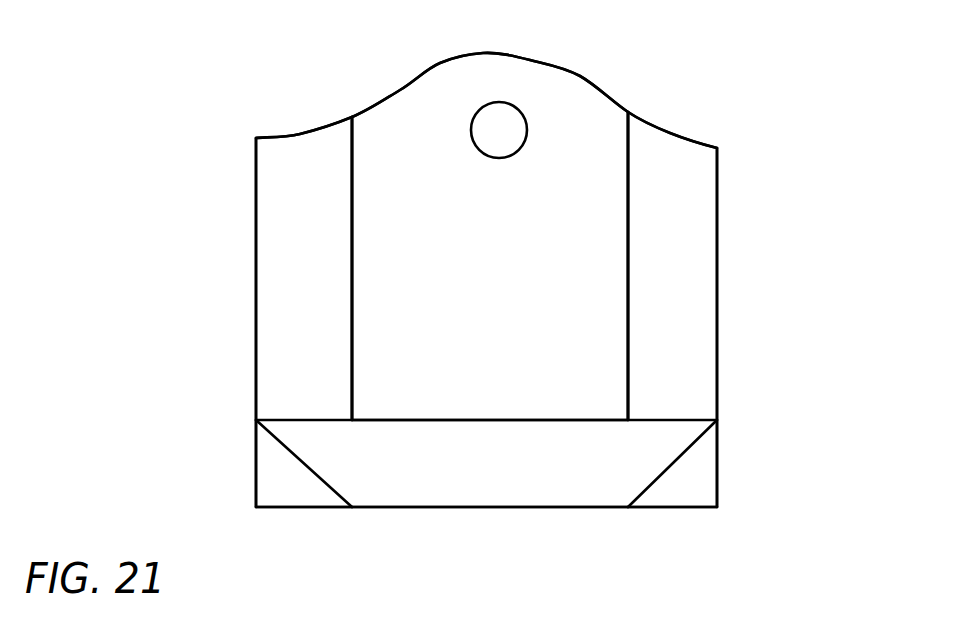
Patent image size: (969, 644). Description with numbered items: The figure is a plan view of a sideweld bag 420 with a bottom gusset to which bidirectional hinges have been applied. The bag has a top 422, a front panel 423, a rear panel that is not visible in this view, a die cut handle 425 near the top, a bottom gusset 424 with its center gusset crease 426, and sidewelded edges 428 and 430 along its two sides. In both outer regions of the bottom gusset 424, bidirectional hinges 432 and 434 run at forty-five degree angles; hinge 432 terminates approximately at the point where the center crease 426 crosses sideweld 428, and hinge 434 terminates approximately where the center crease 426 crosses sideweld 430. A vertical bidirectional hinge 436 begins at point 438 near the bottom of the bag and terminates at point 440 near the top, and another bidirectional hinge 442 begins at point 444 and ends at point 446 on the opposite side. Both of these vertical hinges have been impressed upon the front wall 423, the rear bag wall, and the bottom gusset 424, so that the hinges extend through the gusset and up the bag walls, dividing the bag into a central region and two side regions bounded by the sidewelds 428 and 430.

The sideweld bag 420 is at (728, 210).
The top 422 is at (580, 75).
The front panel 423 is at (515, 288).
The bottom gusset 424 is at (427, 487).
The die cut handle 425 is at (502, 102).
The center gusset crease 426 is at (492, 420).
The sidewelded edge 428 is at (256, 291).
The sidewelded edge 430 is at (717, 292).
The bidirectional hinge 432 is at (280, 443).
The bidirectional hinge 434 is at (673, 465).
The vertical bidirectional hinge 436 is at (352, 208).
The point 438 is at (351, 507).
The point 440 is at (354, 117).
The bidirectional hinge 442 is at (627, 371).
The point 444 is at (627, 507).
The point 446 is at (628, 112).